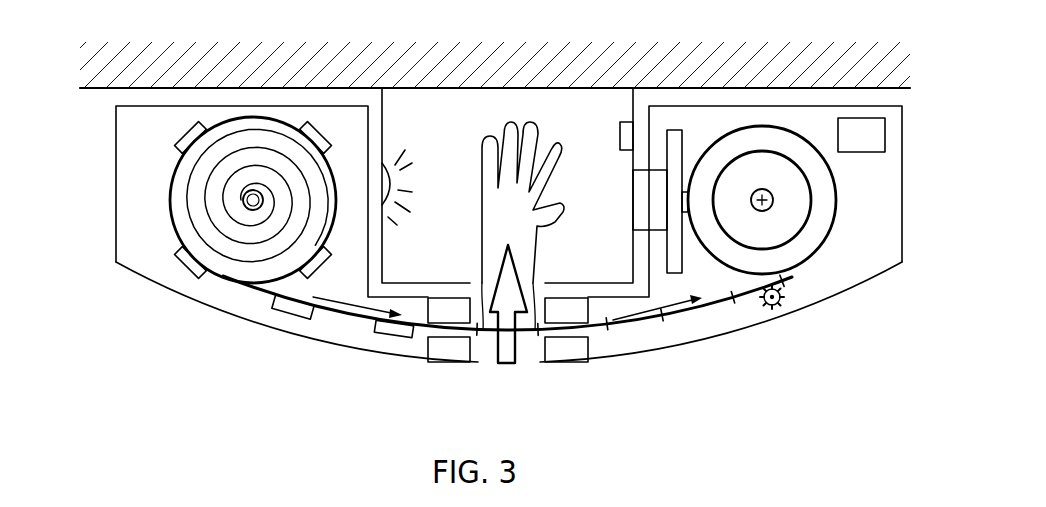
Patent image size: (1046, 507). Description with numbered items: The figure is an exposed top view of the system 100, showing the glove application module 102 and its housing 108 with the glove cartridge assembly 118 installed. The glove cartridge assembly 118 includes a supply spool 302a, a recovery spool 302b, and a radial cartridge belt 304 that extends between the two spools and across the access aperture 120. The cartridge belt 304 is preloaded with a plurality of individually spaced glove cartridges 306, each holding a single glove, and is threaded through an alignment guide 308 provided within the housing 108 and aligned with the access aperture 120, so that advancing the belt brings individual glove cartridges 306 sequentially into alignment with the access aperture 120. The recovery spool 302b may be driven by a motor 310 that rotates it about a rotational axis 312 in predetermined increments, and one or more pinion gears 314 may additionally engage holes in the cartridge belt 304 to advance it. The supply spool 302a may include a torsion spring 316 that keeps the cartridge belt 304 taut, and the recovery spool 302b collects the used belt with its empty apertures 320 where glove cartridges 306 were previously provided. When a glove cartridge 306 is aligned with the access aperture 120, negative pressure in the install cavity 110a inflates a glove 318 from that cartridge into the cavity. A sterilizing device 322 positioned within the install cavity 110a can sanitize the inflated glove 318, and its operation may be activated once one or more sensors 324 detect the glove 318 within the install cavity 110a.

The system 100 is at (503, 216).
The glove application module 102 is at (708, 345).
The housing 108 is at (867, 280).
The install cavity 110a is at (478, 130).
The glove cartridge assembly 118 is at (162, 231).
The access aperture 120 is at (540, 358).
The supply spool 302a is at (177, 195).
The recovery spool 302b is at (810, 183).
The radial cartridge belt 304 is at (346, 320).
The glove cartridges 306 is at (183, 143).
The alignment guide 308 is at (448, 358).
The motor 310 is at (772, 196).
The rotational axis 312 is at (775, 204).
The pinion gear 314 is at (787, 293).
The torsion spring 316 is at (243, 200).
The glove 318 is at (562, 205).
The empty apertures 320 is at (662, 317).
The sterilizing device 322 is at (404, 150).
The sensors 324 is at (626, 122).